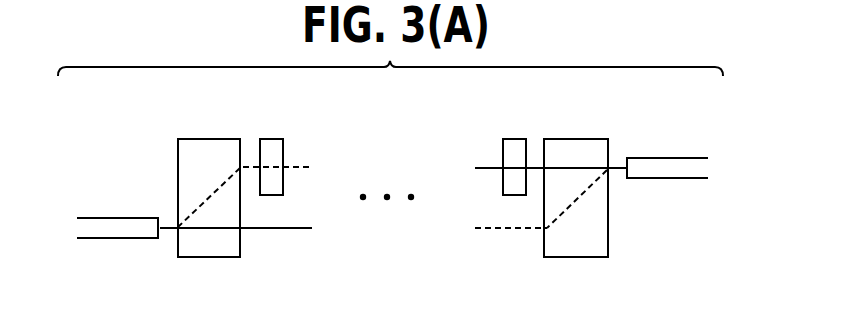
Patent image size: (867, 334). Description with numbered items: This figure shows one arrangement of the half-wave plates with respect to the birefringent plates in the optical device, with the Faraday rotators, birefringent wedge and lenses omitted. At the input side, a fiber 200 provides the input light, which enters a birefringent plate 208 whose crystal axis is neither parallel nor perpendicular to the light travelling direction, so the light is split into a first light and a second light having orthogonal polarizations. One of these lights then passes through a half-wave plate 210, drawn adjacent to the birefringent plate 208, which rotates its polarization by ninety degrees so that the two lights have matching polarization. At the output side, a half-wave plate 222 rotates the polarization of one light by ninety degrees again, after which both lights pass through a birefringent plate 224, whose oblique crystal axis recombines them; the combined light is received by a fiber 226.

The fiber 200 is at (118, 218).
The birefringent plate 208 is at (212, 138).
The half-wave plate 210 is at (270, 138).
The half-wave plate 222 is at (513, 139).
The birefringent plate 224 is at (600, 139).
The fiber 226 is at (657, 178).